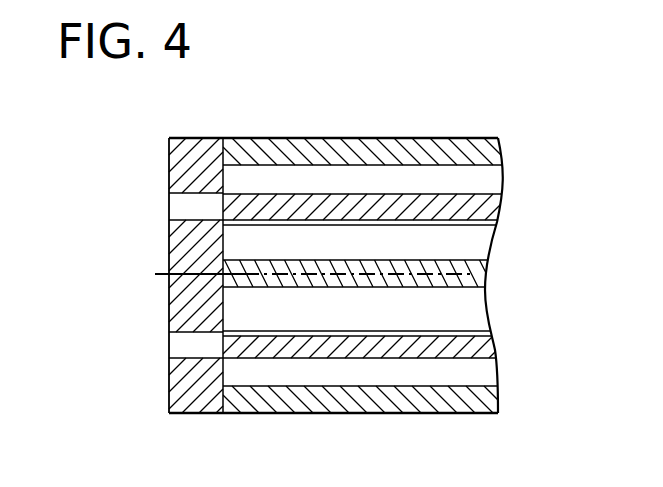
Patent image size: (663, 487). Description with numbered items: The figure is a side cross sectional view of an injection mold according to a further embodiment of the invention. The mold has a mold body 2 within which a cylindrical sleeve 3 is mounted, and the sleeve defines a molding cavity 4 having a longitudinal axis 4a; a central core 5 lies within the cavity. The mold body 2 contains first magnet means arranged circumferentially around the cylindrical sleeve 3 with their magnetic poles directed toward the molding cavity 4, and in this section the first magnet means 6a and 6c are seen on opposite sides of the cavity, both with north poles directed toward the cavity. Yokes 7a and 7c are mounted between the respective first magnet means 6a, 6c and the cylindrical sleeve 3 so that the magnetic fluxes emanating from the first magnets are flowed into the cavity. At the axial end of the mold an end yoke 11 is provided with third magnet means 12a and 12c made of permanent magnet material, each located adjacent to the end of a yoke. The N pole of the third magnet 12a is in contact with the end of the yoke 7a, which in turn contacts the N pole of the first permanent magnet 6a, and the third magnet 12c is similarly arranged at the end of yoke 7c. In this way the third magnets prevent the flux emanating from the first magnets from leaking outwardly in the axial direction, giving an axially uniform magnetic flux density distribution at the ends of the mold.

The mold body 2 is at (240, 138).
The cylindrical sleeve 3 is at (488, 229).
The molding cavity 4 is at (368, 322).
The longitudinal axis 4a is at (487, 277).
The central core 5 is at (464, 248).
The first magnet means 6a is at (341, 182).
The first magnet means 6c is at (347, 386).
The yoke 7a is at (403, 192).
The yoke 7c is at (422, 362).
The end yoke 11 is at (165, 282).
The third magnet means 12a is at (169, 205).
The third magnet means 12c is at (169, 345).